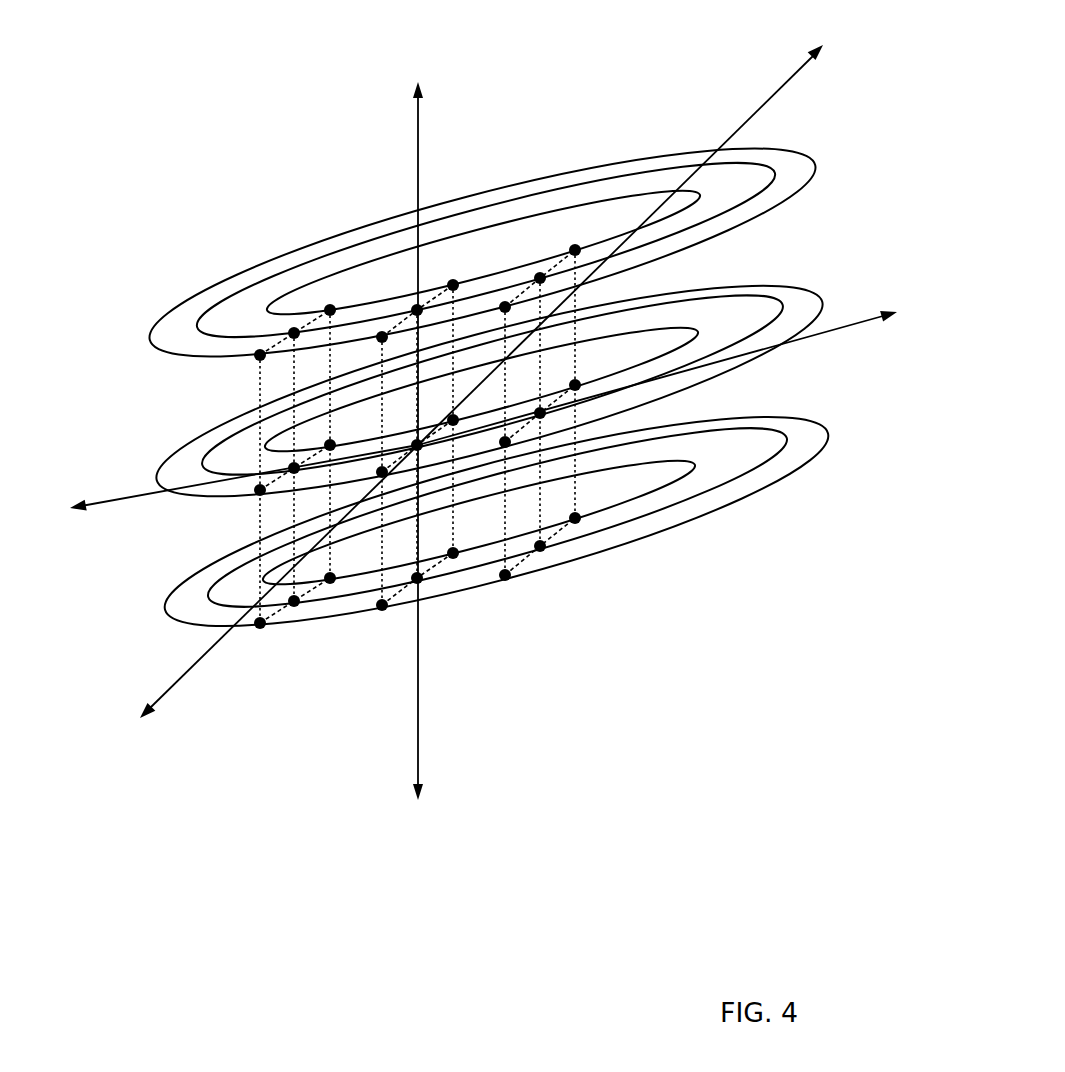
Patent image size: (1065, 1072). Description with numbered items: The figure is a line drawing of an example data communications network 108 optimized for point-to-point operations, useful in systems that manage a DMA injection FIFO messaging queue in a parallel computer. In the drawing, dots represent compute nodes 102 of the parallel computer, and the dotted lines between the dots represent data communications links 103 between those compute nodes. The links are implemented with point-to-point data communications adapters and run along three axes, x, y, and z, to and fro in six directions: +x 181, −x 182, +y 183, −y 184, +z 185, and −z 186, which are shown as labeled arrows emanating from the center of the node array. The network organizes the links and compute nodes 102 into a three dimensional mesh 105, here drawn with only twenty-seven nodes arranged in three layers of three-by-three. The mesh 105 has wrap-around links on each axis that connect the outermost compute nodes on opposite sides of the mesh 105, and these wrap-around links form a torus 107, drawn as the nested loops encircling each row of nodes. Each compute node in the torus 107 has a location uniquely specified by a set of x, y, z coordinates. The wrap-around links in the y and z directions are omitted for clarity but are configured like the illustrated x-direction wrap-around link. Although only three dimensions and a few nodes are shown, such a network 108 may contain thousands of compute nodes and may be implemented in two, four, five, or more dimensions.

The compute nodes 102 is at (505, 577).
The data communications links 103 is at (260, 380).
The three dimensional mesh 105 is at (330, 310).
The torus 107 is at (236, 255).
The data communications network 108 is at (475, 579).
The +x direction 181 is at (675, 368).
The −x direction 182 is at (227, 499).
The +y direction 183 is at (643, 234).
The −y direction 184 is at (260, 610).
The +z direction 185 is at (418, 234).
The −z direction 186 is at (418, 658).